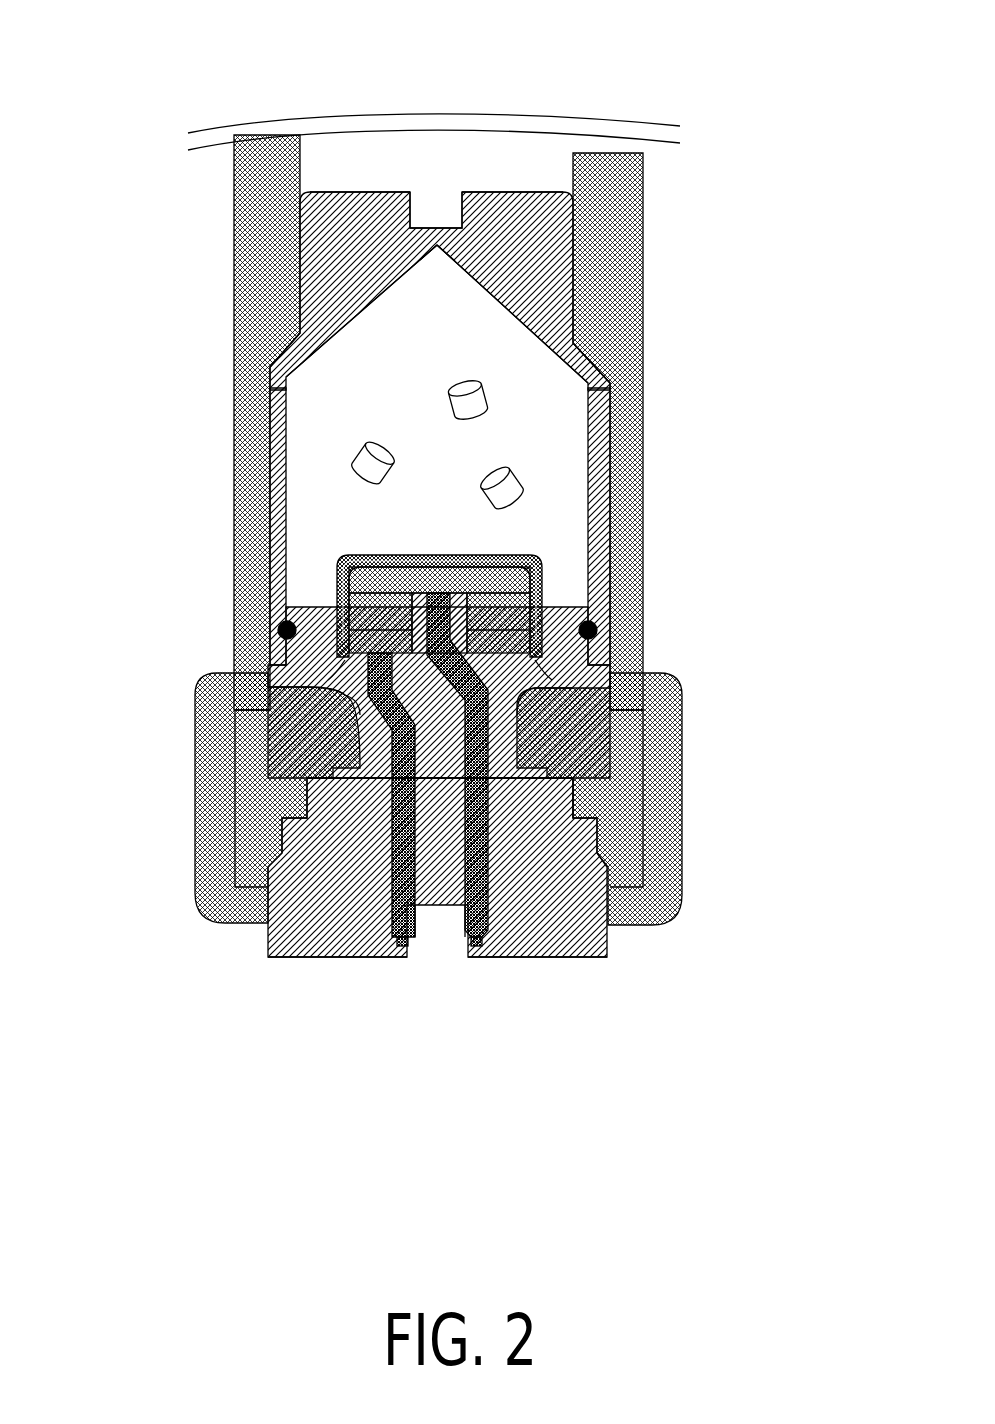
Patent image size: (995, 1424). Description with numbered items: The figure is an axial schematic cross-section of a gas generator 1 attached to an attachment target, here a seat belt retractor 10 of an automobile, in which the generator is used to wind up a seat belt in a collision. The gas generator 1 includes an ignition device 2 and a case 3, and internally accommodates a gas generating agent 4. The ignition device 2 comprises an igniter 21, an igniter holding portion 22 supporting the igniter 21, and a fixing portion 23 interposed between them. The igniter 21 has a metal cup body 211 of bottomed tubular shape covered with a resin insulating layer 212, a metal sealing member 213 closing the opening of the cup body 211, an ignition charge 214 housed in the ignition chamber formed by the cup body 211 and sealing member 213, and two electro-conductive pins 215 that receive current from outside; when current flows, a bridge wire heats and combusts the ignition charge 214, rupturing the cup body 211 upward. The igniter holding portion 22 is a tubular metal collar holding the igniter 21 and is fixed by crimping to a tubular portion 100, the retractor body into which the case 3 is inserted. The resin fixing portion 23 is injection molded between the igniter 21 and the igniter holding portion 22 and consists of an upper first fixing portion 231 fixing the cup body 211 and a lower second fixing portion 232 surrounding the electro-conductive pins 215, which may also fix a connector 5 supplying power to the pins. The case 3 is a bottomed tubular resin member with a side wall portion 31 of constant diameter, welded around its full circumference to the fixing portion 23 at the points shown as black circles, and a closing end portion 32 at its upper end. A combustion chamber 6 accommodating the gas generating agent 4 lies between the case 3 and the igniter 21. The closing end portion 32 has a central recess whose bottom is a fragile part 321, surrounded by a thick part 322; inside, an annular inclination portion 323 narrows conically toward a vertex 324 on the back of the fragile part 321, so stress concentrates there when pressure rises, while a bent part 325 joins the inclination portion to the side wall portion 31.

The seat belt retractor 10 is at (176, 85).
The tubular portion 100 is at (233, 228).
The gas generator 1 is at (464, 652).
The ignition device 2 is at (442, 879).
The igniter 21 is at (356, 841).
The cup body 211 is at (276, 636).
The insulating layer 212 is at (437, 553).
The sealing member 213 is at (266, 688).
The ignition charge 214 is at (300, 615).
The electro-conductive pins 215 is at (418, 932).
The igniter holding portion 22 is at (612, 663).
The fixing portion 23 is at (560, 1010).
The first fixing portion 231 is at (513, 790).
The second fixing portion 232 is at (530, 962).
The case 3 is at (584, 632).
The side wall portion 31 is at (562, 526).
The closing end portion 32 is at (563, 254).
The fragile part 321 is at (437, 228).
The thick part 322 is at (517, 185).
The annular inclination portion 323 is at (500, 313).
The vertex 324 is at (443, 250).
The bent part 325 is at (532, 389).
The gas generating agent 4 is at (362, 445).
The connector 5 is at (533, 958).
The combustion chamber 6 is at (437, 422).